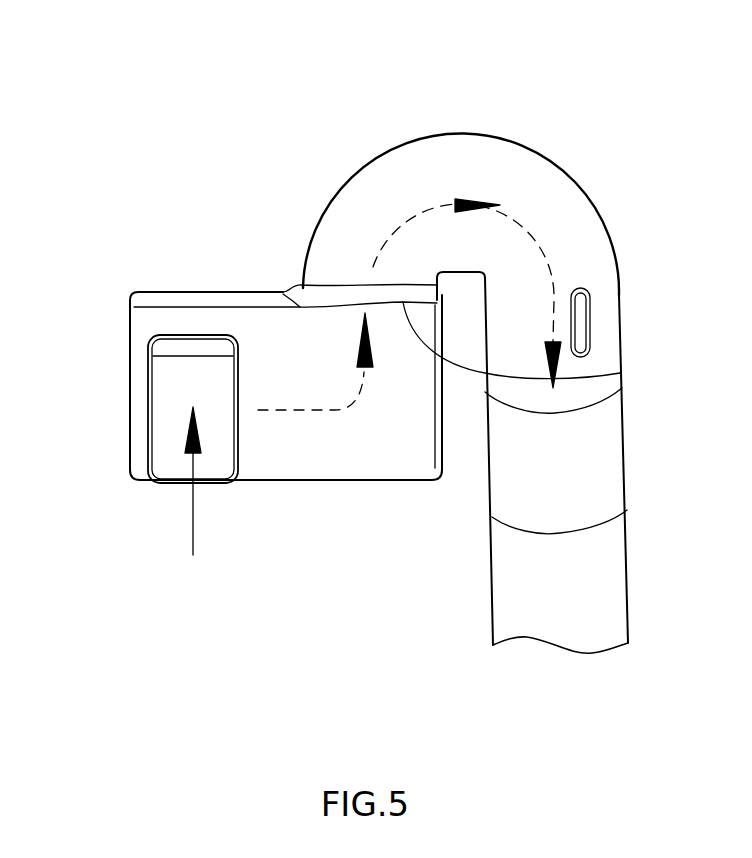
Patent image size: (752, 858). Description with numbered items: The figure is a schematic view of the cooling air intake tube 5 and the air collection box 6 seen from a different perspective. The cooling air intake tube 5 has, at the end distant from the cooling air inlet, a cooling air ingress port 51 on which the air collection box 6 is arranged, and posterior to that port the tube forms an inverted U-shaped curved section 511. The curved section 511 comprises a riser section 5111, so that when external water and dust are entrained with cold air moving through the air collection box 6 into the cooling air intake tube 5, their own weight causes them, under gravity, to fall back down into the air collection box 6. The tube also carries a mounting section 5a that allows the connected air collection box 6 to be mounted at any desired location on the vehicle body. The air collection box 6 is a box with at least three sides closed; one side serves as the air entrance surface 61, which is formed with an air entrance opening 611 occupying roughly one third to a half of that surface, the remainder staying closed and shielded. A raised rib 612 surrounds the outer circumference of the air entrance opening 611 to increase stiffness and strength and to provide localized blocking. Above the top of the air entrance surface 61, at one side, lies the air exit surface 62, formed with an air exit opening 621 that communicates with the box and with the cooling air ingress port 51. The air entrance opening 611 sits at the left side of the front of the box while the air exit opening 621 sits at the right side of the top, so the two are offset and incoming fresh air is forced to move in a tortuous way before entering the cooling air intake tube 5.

The cooling air intake tube 5 is at (610, 475).
The curved section 511 is at (475, 137).
The riser section 5111 is at (350, 213).
The cooling air ingress port 51 is at (338, 285).
The mounting section 5a is at (580, 311).
The air exit opening 621 is at (620, 373).
The air collection box 6 is at (92, 498).
The air entrance surface 61 is at (343, 452).
The air exit surface 62 is at (188, 303).
The air entrance opening 611 is at (176, 387).
The raised rib 612 is at (150, 424).